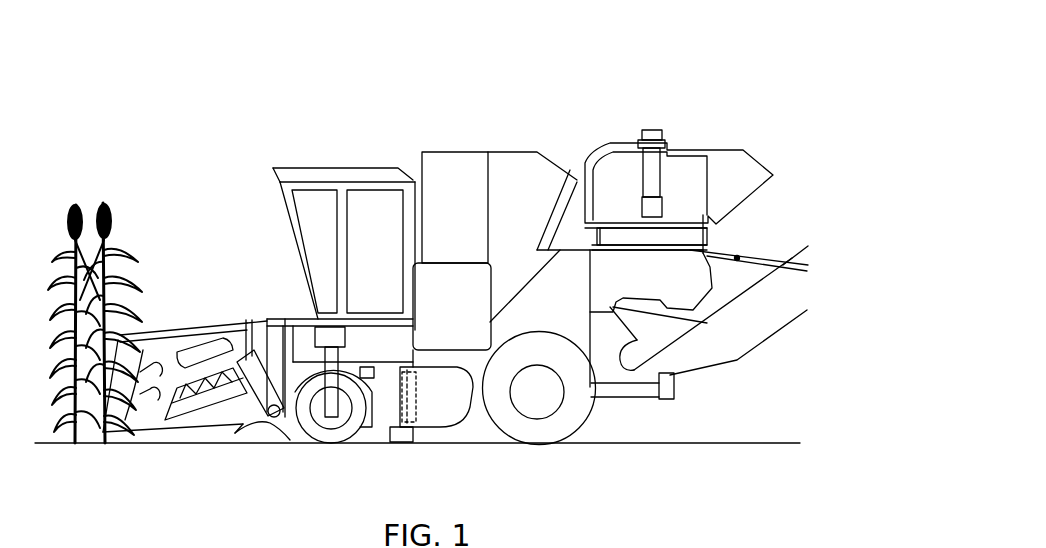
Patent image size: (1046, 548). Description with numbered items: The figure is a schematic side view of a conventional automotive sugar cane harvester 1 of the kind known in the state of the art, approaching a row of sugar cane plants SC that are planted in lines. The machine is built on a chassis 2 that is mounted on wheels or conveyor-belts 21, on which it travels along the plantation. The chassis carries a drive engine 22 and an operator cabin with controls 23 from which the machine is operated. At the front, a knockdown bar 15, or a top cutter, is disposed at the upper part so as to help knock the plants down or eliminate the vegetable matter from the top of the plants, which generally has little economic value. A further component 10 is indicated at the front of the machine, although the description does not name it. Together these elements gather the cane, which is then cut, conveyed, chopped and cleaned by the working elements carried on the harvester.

The automotive harvester 1 is at (303, 104).
The operator cabin with controls 23 is at (375, 232).
The sugar cane plants SC is at (97, 200).
The knockdown bar 15 is at (183, 333).
The header mounting frame 10 is at (250, 352).
The drive engine 22 is at (440, 429).
The wheels or conveyor-belts 21 is at (538, 392).
The chassis 2 is at (628, 390).